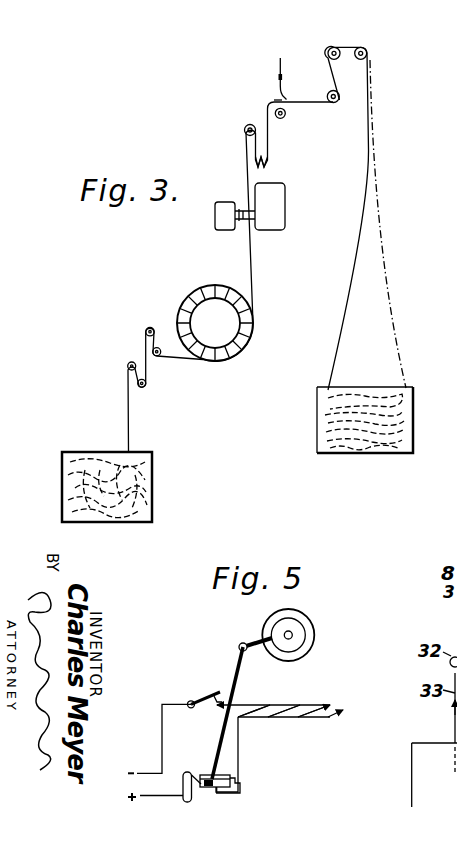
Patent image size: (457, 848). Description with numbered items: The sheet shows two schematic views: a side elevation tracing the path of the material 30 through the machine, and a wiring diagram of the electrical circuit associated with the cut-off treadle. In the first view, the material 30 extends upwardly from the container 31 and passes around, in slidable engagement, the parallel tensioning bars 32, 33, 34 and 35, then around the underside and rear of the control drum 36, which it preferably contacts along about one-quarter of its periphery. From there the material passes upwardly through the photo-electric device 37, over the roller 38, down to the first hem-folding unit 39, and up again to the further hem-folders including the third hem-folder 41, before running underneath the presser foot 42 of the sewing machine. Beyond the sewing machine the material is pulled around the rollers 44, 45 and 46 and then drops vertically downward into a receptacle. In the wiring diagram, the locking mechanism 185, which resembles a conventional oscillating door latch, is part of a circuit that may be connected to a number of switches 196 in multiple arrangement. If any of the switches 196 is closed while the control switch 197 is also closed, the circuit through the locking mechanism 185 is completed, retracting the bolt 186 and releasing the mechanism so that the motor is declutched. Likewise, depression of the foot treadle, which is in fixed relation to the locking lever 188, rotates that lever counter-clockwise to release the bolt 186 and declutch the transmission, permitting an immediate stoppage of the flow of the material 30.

In FIG. 3, the material 30 is at (130, 437).
In FIG. 3, the container 31 is at (153, 491).
In FIG. 3, the tensioning bar 32 is at (128, 363).
In FIG. 3, the tensioning bar 33 is at (145, 388).
In FIG. 3, the tensioning bar 34 is at (150, 327).
In FIG. 3, the tensioning bar 35 is at (163, 356).
In FIG. 3, the control drum 36 is at (212, 280).
In FIG. 3, the photo-electric device 37 is at (288, 208).
In FIG. 3, the roller 38 is at (244, 130).
In FIG. 3, the first hem-folding unit 39 is at (269, 164).
In FIG. 3, the third hem-folder 41 is at (415, 412).
In FIG. 3, the presser foot 42 is at (284, 96).
In FIG. 3, the roller 44 is at (333, 103).
In FIG. 3, the roller 45 is at (329, 50).
In FIG. 3, the roller 46 is at (367, 51).
In FIG. 5, the locking mechanism 185 is at (221, 775).
In FIG. 5, the bolt 186 is at (197, 789).
In FIG. 5, the locking lever 188 is at (190, 772).
In FIG. 5, the switches 196 is at (308, 700).
In FIG. 5, the control switch 197 is at (199, 698).